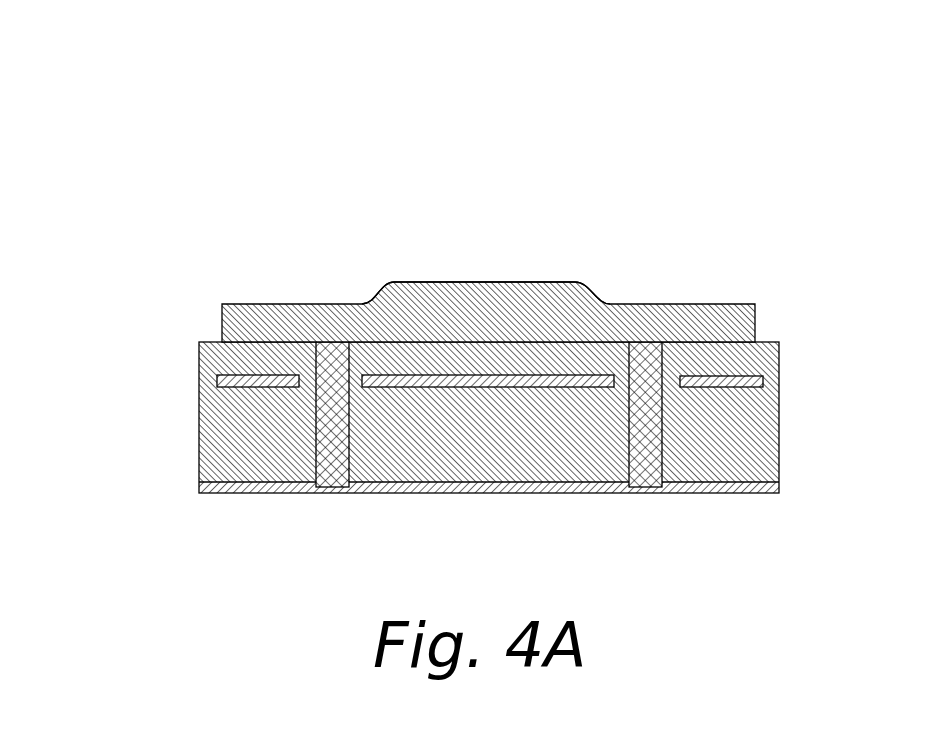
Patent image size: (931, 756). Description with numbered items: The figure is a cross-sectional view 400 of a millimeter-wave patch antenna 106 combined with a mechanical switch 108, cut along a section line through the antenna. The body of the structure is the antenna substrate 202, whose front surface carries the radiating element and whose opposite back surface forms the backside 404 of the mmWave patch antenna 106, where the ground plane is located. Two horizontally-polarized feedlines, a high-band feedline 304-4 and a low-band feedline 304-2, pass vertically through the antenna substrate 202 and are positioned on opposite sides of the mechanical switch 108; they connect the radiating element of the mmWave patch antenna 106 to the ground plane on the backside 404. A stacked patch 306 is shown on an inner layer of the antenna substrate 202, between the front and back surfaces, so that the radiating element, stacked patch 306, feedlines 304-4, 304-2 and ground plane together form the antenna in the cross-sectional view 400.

The cross-sectional view 400 is at (144, 44).
The mmWave patch antenna 106 is at (348, 304).
The mechanical switch 108 is at (490, 282).
The antenna substrate 202 is at (210, 427).
The stacked patch 306 is at (578, 376).
The feedline 304-4 is at (316, 415).
The feedline 304-2 is at (662, 417).
The backside 404 is at (490, 493).